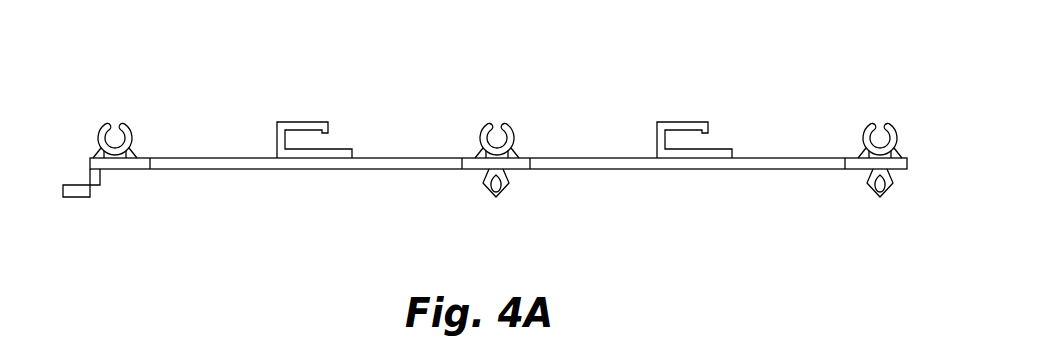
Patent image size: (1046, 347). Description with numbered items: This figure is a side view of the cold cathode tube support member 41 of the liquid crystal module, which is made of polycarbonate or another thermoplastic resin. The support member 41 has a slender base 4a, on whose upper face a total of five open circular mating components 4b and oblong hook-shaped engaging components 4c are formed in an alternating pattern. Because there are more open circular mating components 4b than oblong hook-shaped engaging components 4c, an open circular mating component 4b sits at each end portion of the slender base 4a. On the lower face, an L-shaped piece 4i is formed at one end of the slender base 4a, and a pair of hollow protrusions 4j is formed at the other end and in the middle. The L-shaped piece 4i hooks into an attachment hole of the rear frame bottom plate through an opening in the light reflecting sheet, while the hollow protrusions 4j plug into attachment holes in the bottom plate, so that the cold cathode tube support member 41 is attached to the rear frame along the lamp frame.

The cold cathode tube support member 41 is at (498, 87).
The slender base 4a is at (583, 158).
The open circular mating component 4b is at (128, 125).
The oblong hook-shaped engaging component 4c is at (302, 130).
The L-shaped piece 4i is at (77, 198).
The hollow protrusion 4j is at (496, 200).